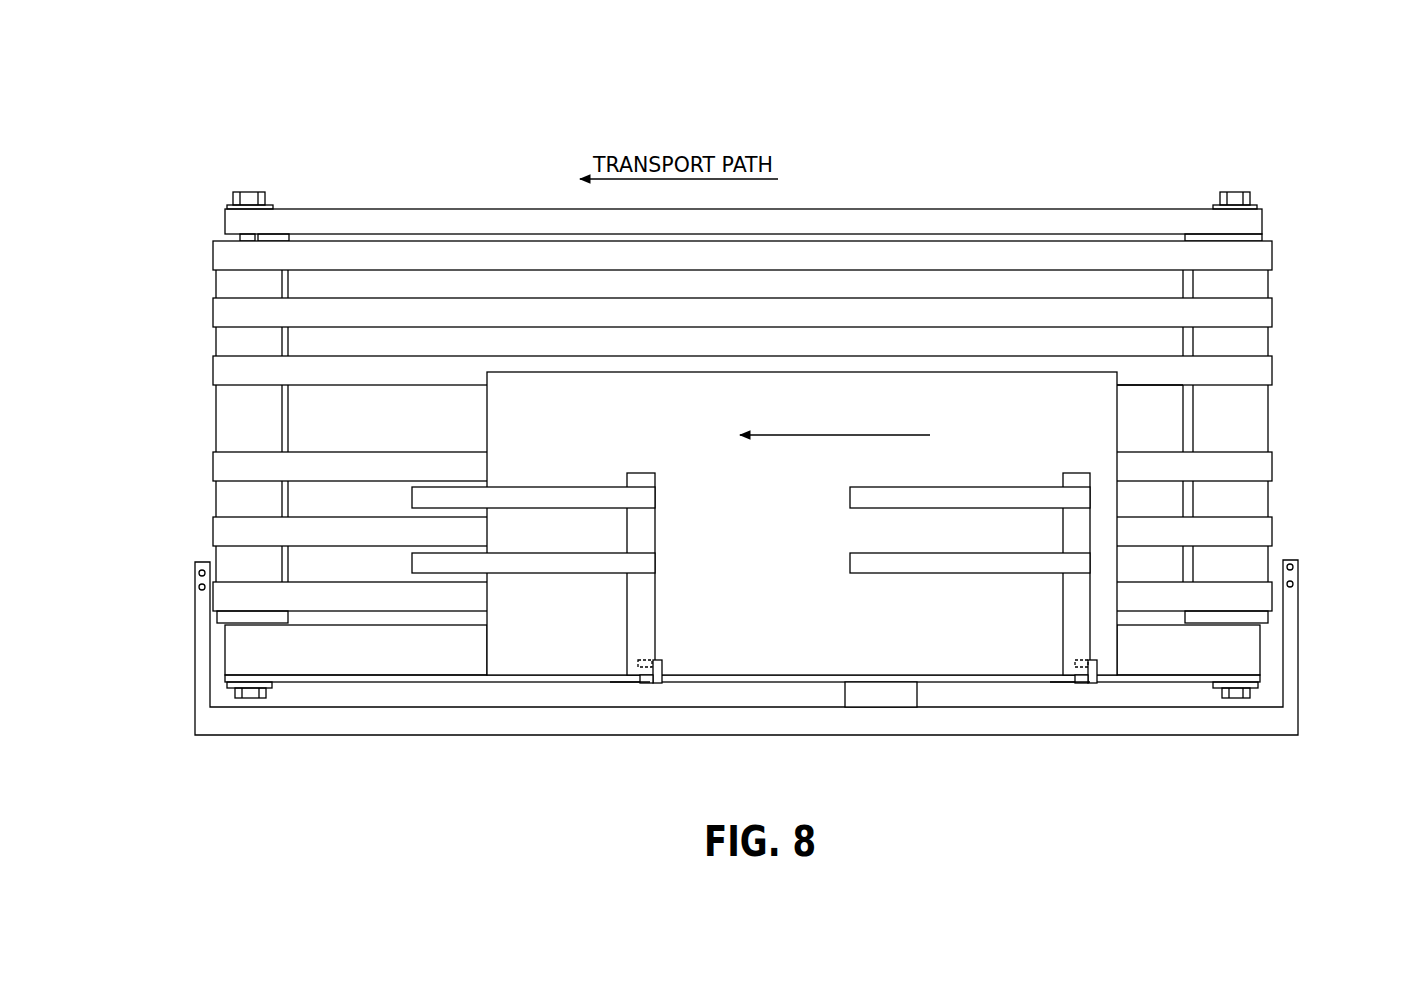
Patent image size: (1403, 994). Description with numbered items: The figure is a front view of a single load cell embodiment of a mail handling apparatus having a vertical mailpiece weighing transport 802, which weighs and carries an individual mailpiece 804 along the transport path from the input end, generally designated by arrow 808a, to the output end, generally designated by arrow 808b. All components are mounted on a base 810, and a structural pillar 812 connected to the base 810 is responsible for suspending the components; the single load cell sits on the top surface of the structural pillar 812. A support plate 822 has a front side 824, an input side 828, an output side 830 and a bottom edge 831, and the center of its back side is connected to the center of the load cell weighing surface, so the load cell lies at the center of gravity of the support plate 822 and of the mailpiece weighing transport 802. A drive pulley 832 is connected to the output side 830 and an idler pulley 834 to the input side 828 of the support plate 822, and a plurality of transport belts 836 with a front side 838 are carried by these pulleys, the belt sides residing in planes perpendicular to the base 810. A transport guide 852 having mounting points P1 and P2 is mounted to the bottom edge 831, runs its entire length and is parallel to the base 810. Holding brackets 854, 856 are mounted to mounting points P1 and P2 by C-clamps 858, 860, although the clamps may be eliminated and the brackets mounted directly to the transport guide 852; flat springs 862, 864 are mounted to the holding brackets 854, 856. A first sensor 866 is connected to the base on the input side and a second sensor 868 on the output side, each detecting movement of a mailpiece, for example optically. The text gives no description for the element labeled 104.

The vertical mailpiece weighing transport 802 is at (972, 192).
The mailpiece 804 is at (937, 370).
The arrow designating input end 808a is at (1297, 272).
The arrow designating output end 808b is at (185, 312).
The base 810 is at (1285, 740).
The structural pillar 812 is at (873, 690).
The support plate 822 is at (372, 660).
The front side of support plate 824 is at (325, 423).
The input side of support plate 828 is at (1297, 243).
The output side of support plate 830 is at (188, 230).
The bottom edge of support plate 831 is at (223, 660).
The drive pulley 832 is at (280, 193).
The idler pulley 834 is at (1253, 193).
The transport belts 836 is at (1272, 363).
The front side of transport belts 838 is at (1185, 370).
The substrate 104 is at (1120, 397).
The transport guide 852 is at (1140, 676).
The holding bracket 854 is at (642, 533).
The holding bracket 856 is at (1060, 625).
The C-clamp 858 is at (657, 685).
The C-clamp 860 is at (1090, 685).
The flat spring 862 is at (532, 492).
The flat spring 864 is at (1000, 490).
The first sensor 866 is at (1298, 572).
The second sensor 868 is at (197, 590).
The mounting point P1 is at (630, 692).
The mounting point P2 is at (1070, 690).